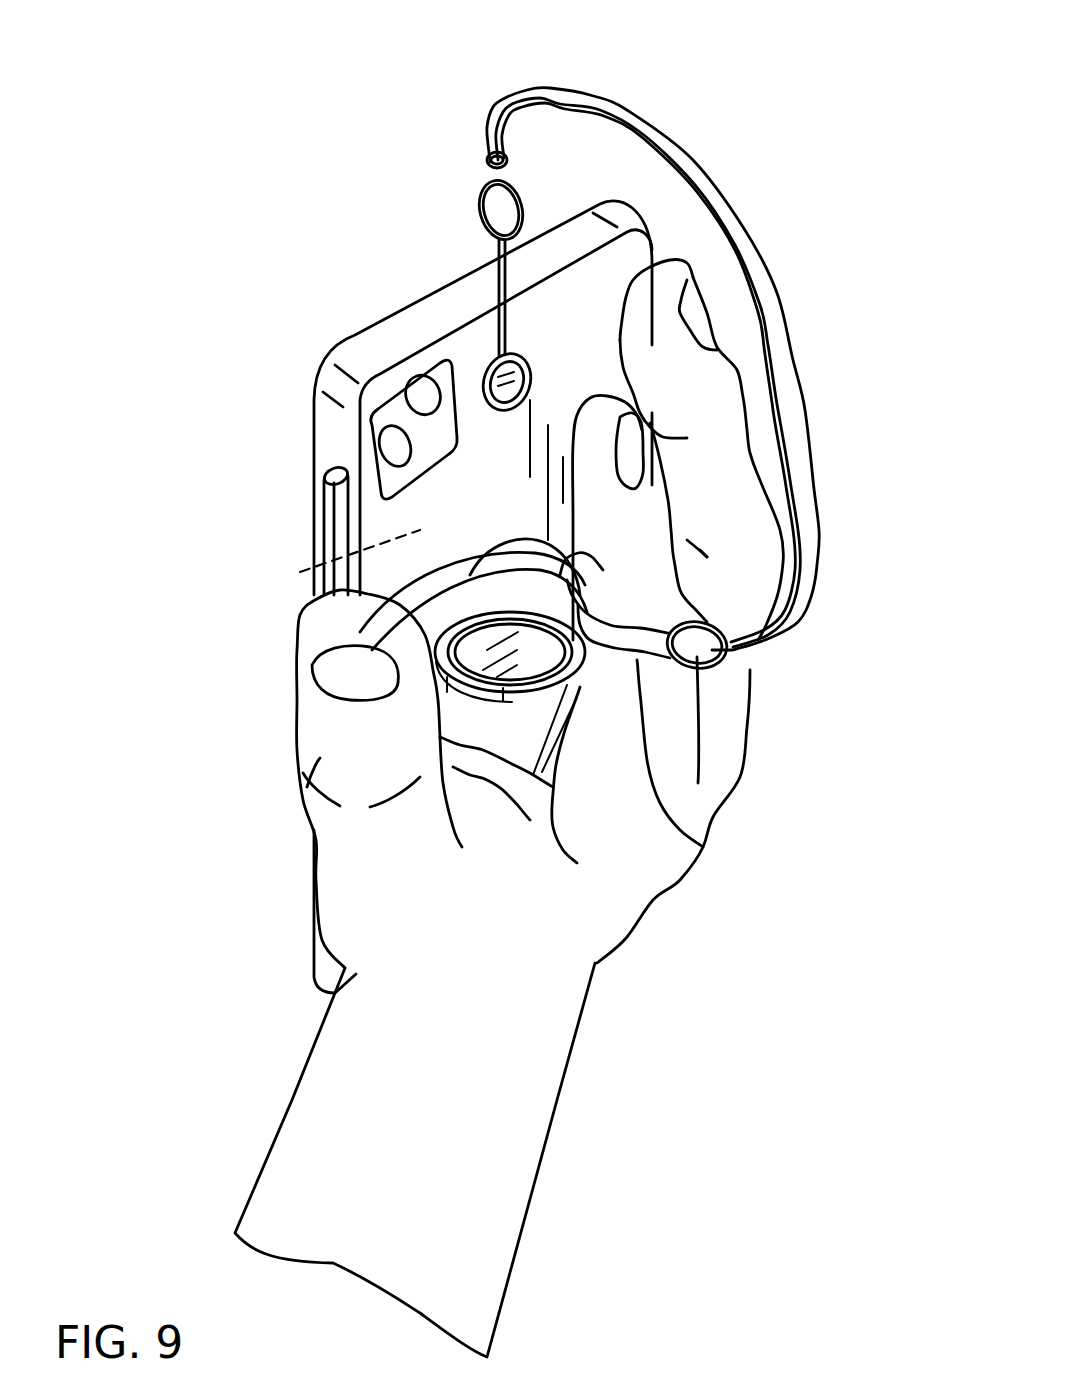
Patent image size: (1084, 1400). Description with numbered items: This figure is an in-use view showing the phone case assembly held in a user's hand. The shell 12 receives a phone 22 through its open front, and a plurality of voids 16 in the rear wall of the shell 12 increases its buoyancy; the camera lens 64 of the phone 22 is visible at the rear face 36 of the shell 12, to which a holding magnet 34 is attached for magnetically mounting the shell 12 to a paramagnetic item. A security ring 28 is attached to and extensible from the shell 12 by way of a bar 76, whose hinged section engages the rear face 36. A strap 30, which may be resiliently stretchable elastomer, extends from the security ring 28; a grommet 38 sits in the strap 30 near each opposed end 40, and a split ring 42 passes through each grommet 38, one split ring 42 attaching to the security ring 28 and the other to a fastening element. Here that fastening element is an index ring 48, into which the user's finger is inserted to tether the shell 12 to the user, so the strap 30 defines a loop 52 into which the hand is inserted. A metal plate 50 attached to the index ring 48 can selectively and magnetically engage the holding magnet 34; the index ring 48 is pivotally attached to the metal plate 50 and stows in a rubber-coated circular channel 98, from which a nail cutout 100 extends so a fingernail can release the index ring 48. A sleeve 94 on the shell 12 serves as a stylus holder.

The shell 12 is at (403, 328).
The plurality of voids 16 is at (405, 400).
The phone 22 is at (300, 572).
The security ring 28 is at (481, 213).
The strap 30 is at (642, 150).
The holding magnet 34 is at (472, 562).
The rear face 36 is at (500, 503).
The grommet 38 is at (723, 647).
The opposed end 40 is at (488, 168).
The split ring 42 is at (523, 188).
The index ring 48 is at (703, 847).
The metal plate 50 is at (490, 672).
The loop 52 is at (670, 228).
The camera lens 64 is at (392, 430).
The bar 76 is at (500, 300).
The sleeve 94 is at (333, 500).
The circular channel 98 is at (538, 683).
The nail cutout 100 is at (307, 787).